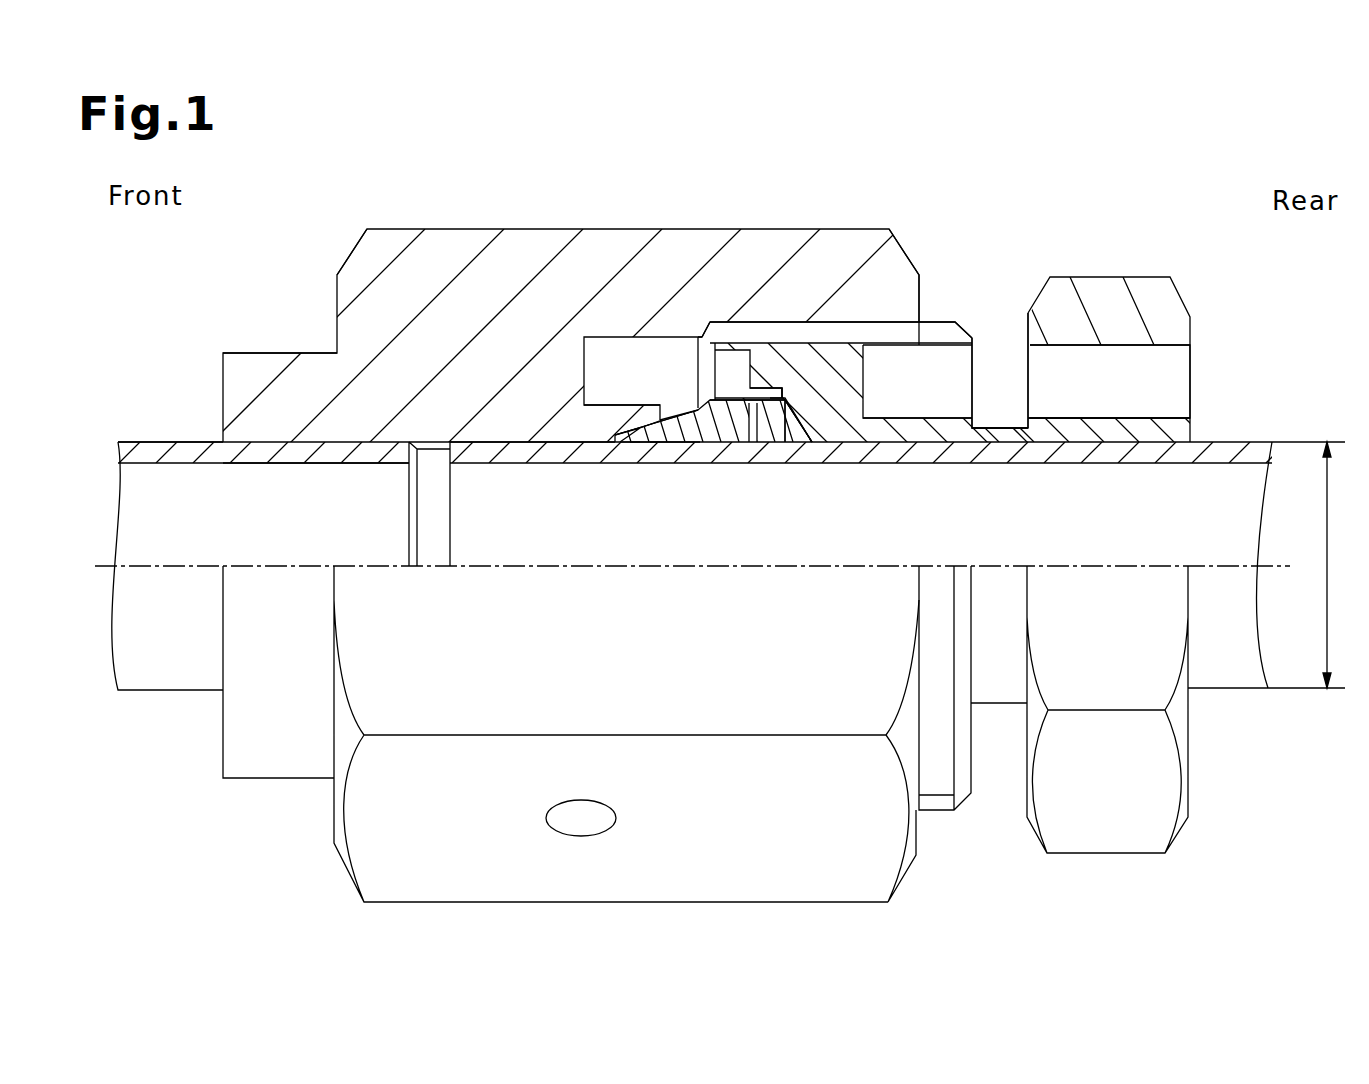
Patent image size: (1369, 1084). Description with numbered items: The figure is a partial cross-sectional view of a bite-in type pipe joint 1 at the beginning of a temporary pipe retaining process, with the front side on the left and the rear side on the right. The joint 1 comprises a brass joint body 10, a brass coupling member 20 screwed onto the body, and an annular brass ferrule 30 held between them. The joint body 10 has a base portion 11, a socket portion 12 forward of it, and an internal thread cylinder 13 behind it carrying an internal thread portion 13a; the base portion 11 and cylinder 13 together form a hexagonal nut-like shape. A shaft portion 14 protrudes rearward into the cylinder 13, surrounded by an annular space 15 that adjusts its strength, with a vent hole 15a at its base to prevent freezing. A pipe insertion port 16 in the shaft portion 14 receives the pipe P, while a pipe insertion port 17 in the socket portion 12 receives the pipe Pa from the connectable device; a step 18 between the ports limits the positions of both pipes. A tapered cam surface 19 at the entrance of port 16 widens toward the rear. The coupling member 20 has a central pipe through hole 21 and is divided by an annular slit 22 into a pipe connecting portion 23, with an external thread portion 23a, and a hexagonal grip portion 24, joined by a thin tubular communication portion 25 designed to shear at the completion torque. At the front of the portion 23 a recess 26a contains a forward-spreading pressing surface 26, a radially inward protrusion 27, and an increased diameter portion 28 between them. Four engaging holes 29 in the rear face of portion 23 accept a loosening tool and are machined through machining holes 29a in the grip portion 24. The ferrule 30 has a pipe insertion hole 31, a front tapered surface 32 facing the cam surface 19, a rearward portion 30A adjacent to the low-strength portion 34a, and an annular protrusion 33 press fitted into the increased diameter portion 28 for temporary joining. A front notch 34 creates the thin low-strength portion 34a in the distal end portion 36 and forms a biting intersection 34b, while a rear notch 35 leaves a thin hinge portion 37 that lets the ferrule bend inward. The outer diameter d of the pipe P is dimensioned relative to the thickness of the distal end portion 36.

The bite-in type pipe joint 1 is at (913, 226).
The joint body 10 is at (445, 229).
The base portion 11 is at (270, 352).
The socket portion 12 is at (373, 229).
The internal thread cylinder 13 is at (757, 229).
The internal thread portion 13a is at (703, 340).
The shaft portion 14 is at (640, 406).
The annular space 15 is at (612, 337).
The vent hole 15a is at (606, 835).
The pipe insertion port 16 is at (500, 458).
The pipe insertion port 17 is at (306, 462).
The step 18 is at (420, 455).
The cam surface 19 is at (641, 446).
The coupling member 20 is at (1190, 242).
The pipe through hole 21 is at (1096, 448).
The slit 22 is at (978, 385).
The pipe connecting portion 23 is at (845, 345).
The external thread portion 23a is at (938, 322).
The grip portion 24 is at (1150, 277).
The tubular communication portion 25 is at (996, 446).
The pressing surface 26 is at (795, 445).
The recess 26a is at (797, 446).
The protrusion 27 is at (758, 390).
The increased diameter portion 28 is at (782, 390).
The engaging hole 29 is at (917, 381).
The machining hole 29a is at (1103, 348).
The ferrule 30 is at (715, 445).
The rearward portion 30A is at (655, 428).
The pipe insertion hole 31 is at (666, 448).
The tapered surface 32 is at (669, 414).
The annular protrusion 33 is at (790, 400).
The notch 34 is at (619, 445).
The low-strength portion 34a is at (616, 433).
The intersection 34b is at (628, 448).
The notch 35 is at (752, 445).
The distal end portion 36 is at (612, 438).
The thin portion 37 is at (748, 374).
The pipe P is at (1254, 442).
The pipe Pa is at (182, 442).
The outer diameter d is at (1306, 565).